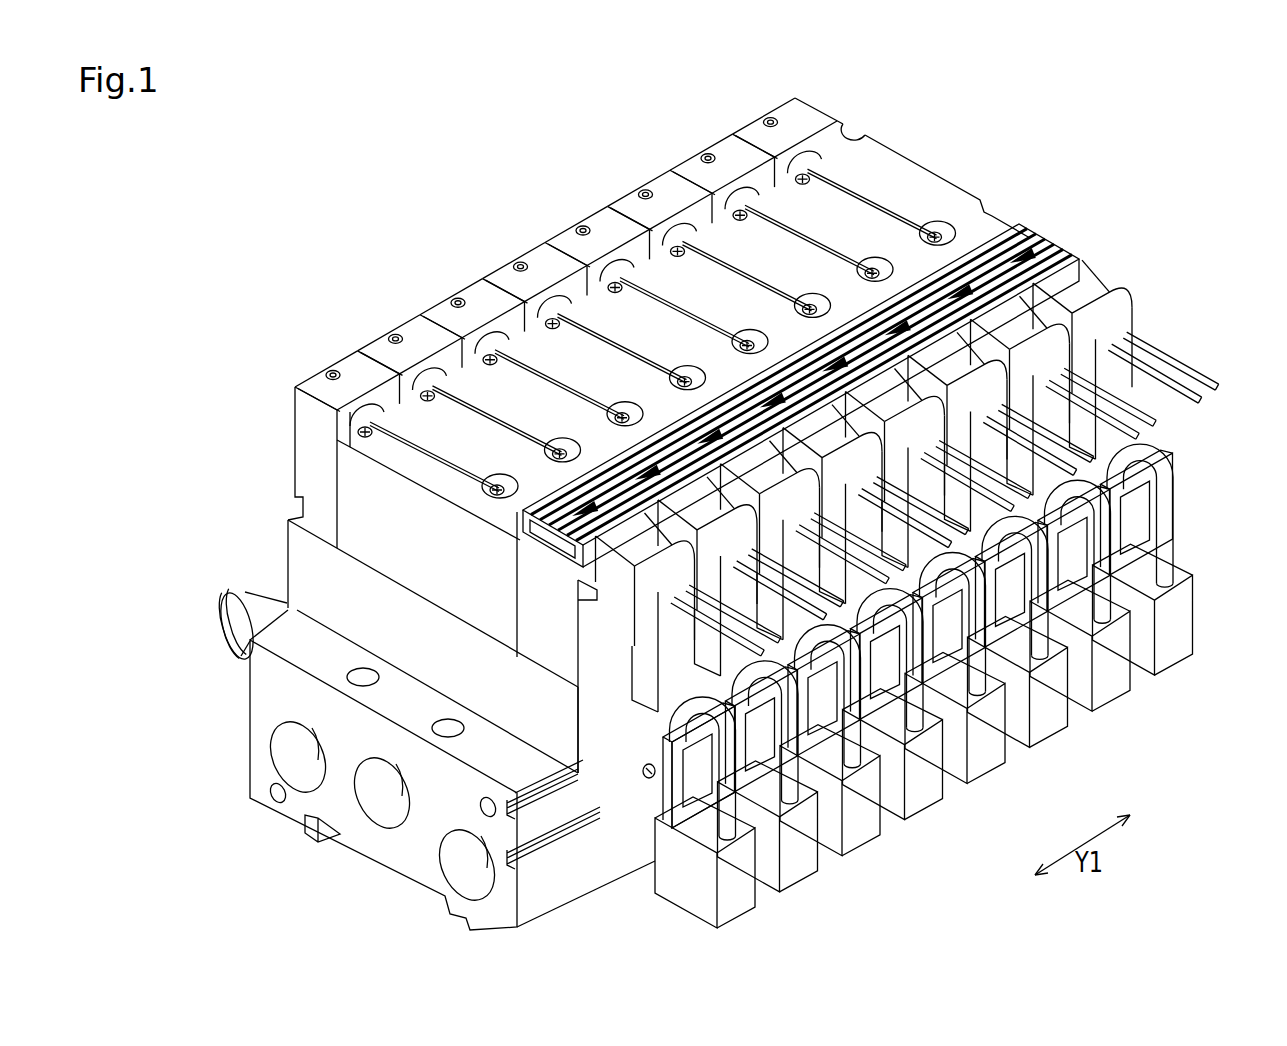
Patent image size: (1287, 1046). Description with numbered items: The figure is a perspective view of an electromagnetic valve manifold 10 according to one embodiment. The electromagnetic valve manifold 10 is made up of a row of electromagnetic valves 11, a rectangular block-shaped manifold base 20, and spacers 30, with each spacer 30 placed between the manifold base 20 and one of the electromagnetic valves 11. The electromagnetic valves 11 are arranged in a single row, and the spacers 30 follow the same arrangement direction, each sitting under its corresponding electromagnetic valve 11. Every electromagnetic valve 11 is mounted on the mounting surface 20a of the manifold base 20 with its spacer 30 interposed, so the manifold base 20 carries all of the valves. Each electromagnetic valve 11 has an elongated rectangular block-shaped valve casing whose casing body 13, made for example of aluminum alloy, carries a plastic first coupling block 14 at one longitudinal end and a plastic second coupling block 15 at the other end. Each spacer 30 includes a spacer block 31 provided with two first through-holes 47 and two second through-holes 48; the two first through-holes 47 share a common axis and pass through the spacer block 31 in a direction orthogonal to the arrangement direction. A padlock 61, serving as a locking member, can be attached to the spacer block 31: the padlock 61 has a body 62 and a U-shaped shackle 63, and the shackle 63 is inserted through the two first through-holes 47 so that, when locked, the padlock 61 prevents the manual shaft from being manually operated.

The electromagnetic valve manifold 10 is at (245, 205).
The electromagnetic valve 11 is at (315, 340).
The casing body 13 is at (470, 440).
The first coupling block 14 is at (562, 453).
The second coupling block 15 is at (340, 368).
The manifold base 20 is at (257, 800).
The mounting surface 20a is at (500, 763).
The spacer 30 is at (276, 520).
The spacer block 31 is at (313, 587).
The first through-hole 47 is at (660, 724).
The second through-hole 48 is at (642, 770).
The padlock 61 is at (868, 840).
The body 62 is at (682, 887).
The shackle 63 is at (712, 813).